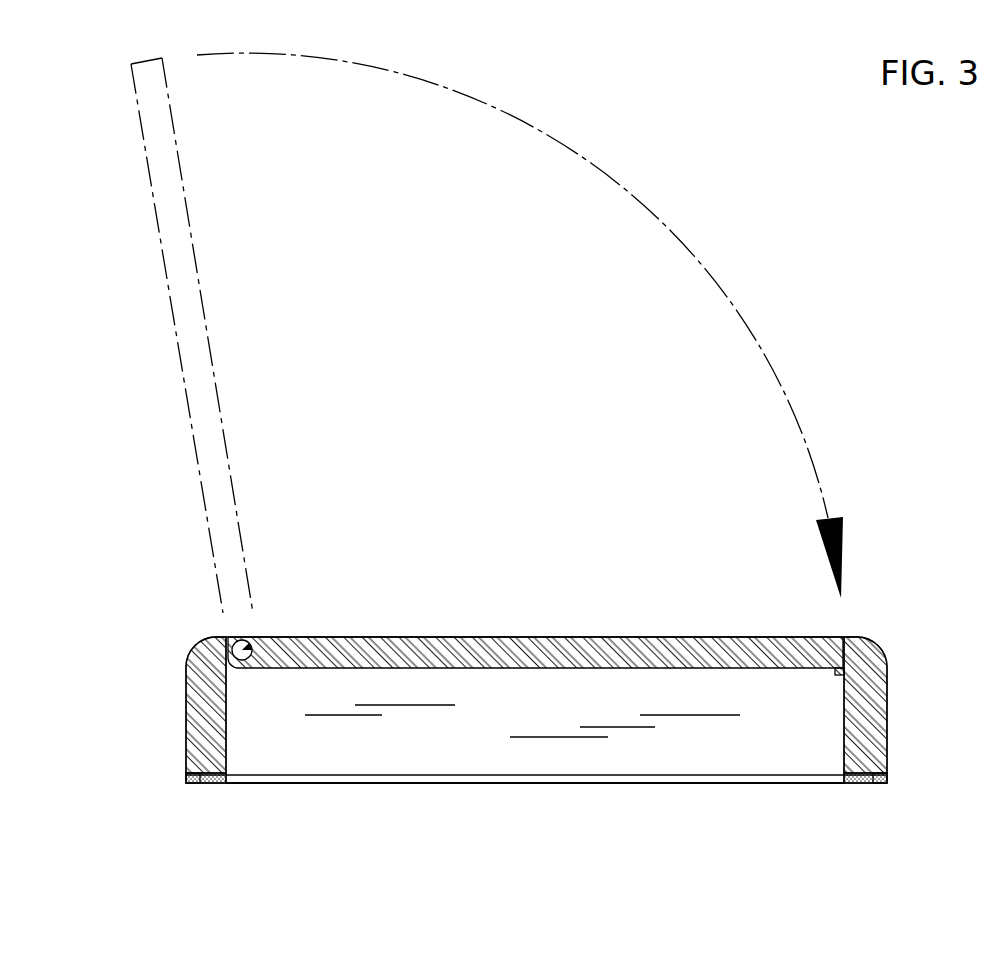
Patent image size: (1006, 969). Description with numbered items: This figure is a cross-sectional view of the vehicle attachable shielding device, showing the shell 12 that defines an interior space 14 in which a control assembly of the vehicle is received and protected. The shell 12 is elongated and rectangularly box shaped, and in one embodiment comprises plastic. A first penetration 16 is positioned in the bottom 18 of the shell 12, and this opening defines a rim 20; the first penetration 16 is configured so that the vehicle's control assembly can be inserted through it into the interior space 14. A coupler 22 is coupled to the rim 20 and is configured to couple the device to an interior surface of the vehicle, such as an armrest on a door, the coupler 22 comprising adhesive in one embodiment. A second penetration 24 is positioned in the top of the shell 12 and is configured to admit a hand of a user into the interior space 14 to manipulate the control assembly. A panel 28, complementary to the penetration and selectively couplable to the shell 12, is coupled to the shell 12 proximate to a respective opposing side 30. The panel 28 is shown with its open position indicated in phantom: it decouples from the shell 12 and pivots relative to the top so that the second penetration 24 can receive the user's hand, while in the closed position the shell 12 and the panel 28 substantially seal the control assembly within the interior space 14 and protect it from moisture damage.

The shell 12 is at (183, 664).
The interior space 14 is at (457, 727).
The first penetration 16 is at (514, 785).
The bottom 18 is at (597, 785).
The rim 20 is at (220, 783).
The coupler 22 is at (193, 784).
The second penetration 24 is at (637, 637).
The panel 28 is at (497, 637).
The opposing side 30 is at (892, 706).